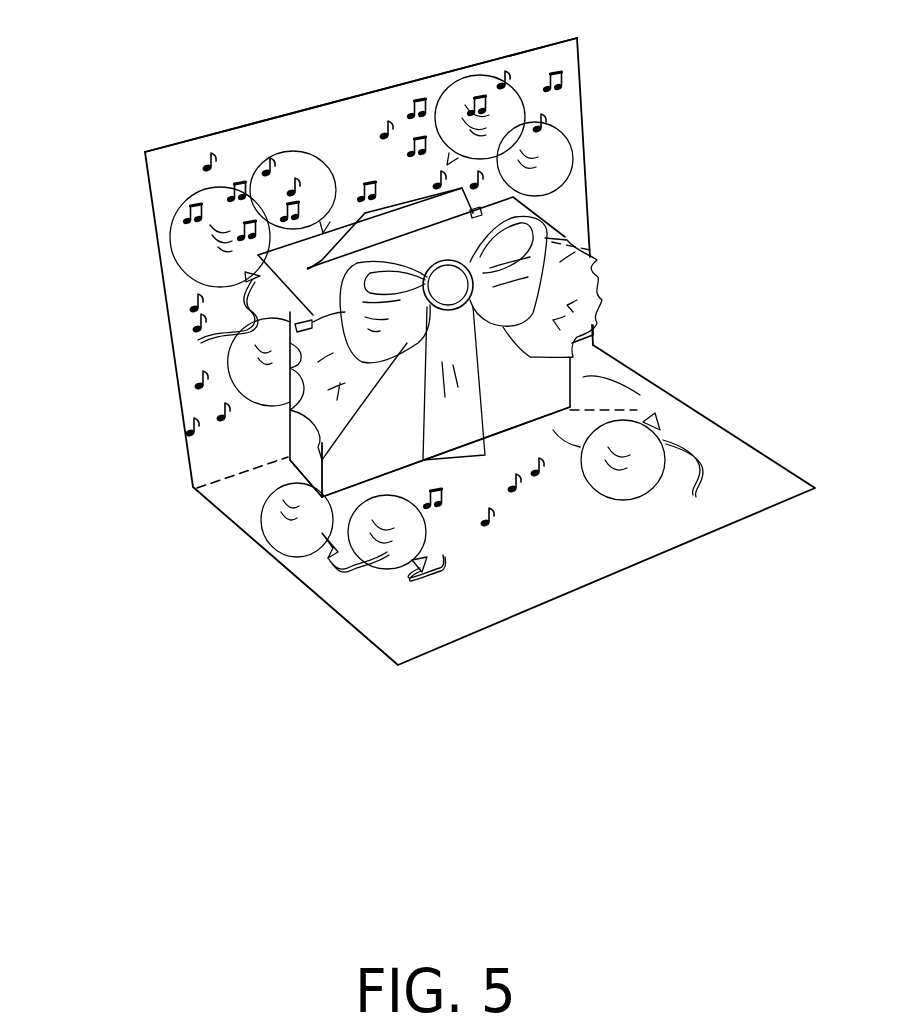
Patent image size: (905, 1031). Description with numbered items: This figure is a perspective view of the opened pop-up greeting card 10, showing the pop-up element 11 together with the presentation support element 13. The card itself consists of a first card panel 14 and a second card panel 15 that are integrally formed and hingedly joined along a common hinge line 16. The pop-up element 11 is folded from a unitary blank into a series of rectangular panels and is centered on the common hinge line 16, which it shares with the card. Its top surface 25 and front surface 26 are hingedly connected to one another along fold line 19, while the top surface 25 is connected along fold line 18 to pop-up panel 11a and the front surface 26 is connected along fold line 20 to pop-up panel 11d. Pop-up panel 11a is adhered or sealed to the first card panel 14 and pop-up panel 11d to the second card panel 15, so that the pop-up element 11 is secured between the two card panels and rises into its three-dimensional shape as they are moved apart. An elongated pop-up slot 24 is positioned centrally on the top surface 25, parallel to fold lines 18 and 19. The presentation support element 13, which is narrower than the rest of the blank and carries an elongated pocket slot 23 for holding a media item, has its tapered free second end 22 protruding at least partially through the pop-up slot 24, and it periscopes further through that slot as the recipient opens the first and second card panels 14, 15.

The pop-up greeting card 10 is at (165, 100).
The pop-up element 11 is at (607, 300).
The pop-up panel 11a is at (270, 270).
The pop-up panel 11d is at (345, 472).
The presentation support element 13 is at (442, 202).
The first card panel 14 is at (566, 110).
The second card panel 15 is at (558, 567).
The common hinge line 16 is at (322, 452).
The fold line 18 is at (257, 255).
The fold line 19 is at (547, 241).
The fold line 20 is at (570, 410).
The second end 22 is at (418, 196).
The pocket slot 23 is at (313, 322).
The pop-up slot 24 is at (513, 197).
The top surface 25 is at (308, 283).
The front surface 26 is at (322, 495).